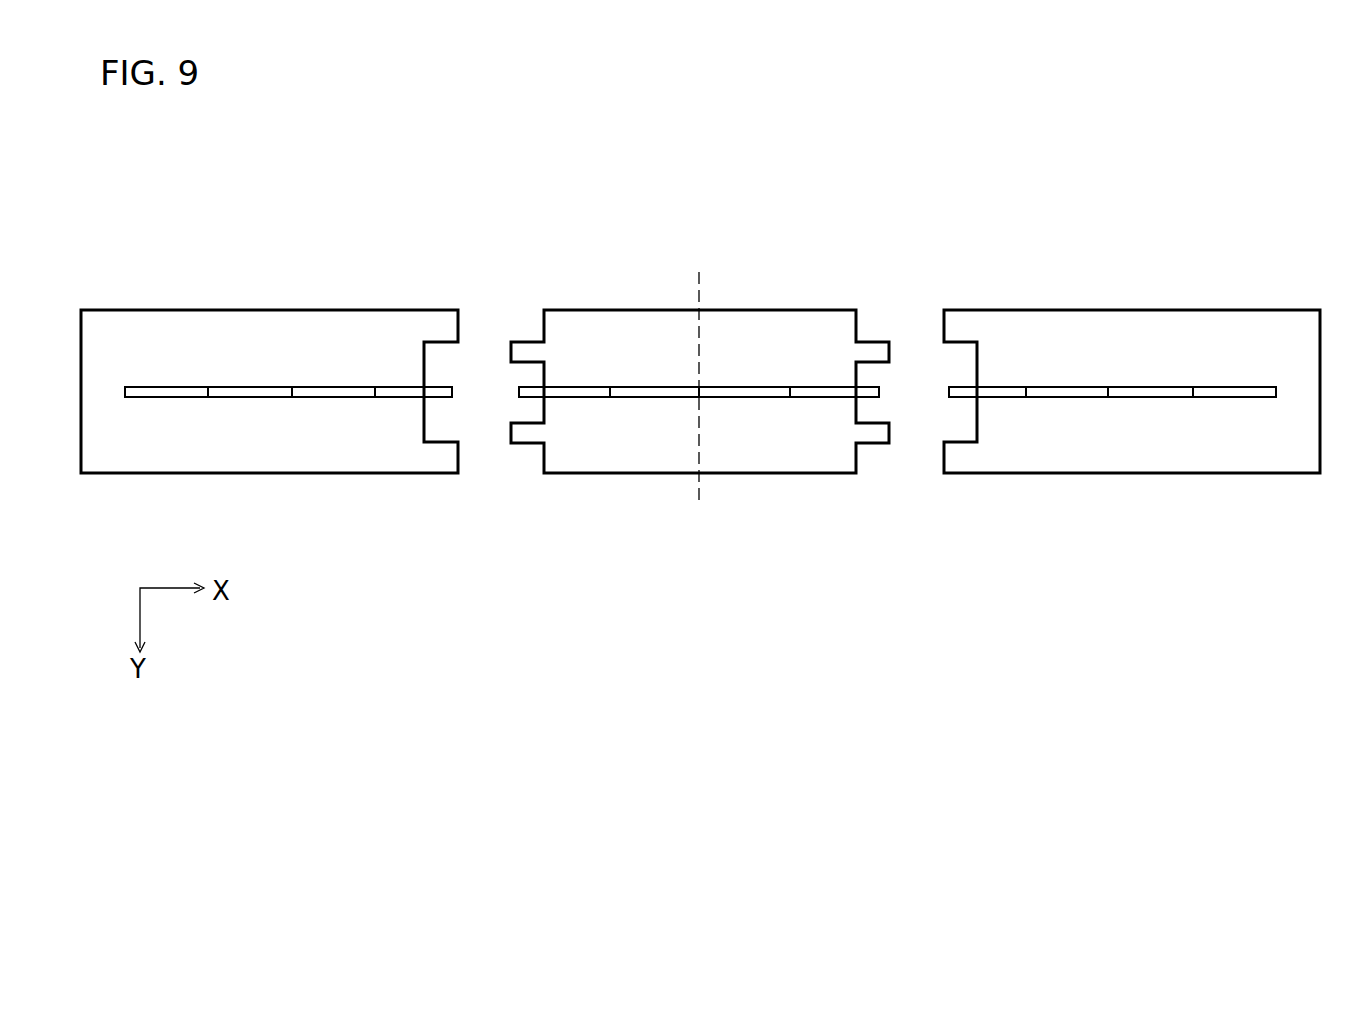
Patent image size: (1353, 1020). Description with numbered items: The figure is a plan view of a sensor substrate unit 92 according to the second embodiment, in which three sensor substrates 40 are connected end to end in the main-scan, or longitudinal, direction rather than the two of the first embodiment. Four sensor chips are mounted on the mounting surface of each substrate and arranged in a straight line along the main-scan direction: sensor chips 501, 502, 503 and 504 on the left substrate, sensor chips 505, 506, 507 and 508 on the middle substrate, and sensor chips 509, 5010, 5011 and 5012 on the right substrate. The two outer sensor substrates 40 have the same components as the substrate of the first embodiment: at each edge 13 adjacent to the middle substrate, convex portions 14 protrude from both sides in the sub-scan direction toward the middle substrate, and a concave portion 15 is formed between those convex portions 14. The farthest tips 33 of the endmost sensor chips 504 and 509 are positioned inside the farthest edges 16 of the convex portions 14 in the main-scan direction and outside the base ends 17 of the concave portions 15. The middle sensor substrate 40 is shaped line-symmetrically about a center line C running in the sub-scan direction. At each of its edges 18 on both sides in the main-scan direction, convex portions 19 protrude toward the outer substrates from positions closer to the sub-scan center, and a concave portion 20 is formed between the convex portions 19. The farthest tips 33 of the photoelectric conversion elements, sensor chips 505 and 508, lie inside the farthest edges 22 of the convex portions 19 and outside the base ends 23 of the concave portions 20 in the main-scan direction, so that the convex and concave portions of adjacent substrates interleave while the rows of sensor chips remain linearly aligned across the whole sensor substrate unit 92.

The sensor substrate unit 92 is at (903, 195).
The sensor substrate 40 is at (237, 308).
The center line C is at (699, 286).
The farthest tip 33 is at (452, 393).
The concave portion 15 is at (442, 365).
The convex portion 14 is at (437, 322).
The farthest edge 16 is at (460, 327).
The farthest edge 22 is at (510, 350).
The convex portion 19 is at (526, 350).
The concave portion 20 is at (533, 370).
The base end 23 is at (540, 384).
The base end 17 is at (425, 409).
The edge 13 is at (421, 444).
The edge 18 is at (555, 450).
The sensor chip 501 is at (170, 398).
The sensor chip 502 is at (252, 398).
The sensor chip 503 is at (320, 398).
The sensor chip 504 is at (380, 398).
The sensor chip 505 is at (597, 398).
The sensor chip 506 is at (667, 398).
The sensor chip 507 is at (747, 398).
The sensor chip 508 is at (807, 398).
The sensor chip 509 is at (1037, 398).
The sensor chip 5010 is at (1070, 398).
The sensor chip 5011 is at (1143, 398).
The sensor chip 5012 is at (1230, 398).